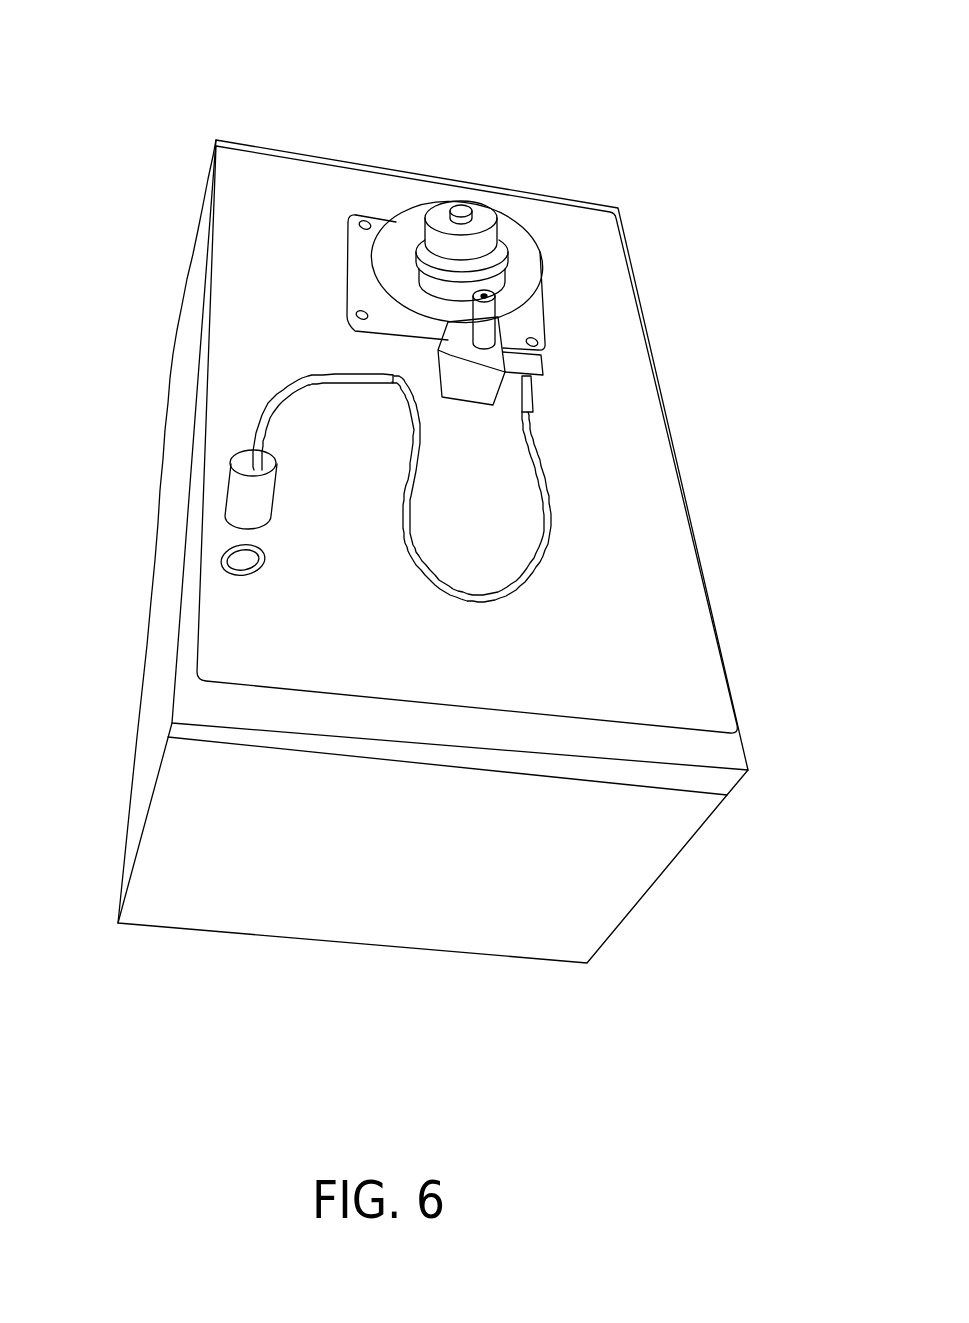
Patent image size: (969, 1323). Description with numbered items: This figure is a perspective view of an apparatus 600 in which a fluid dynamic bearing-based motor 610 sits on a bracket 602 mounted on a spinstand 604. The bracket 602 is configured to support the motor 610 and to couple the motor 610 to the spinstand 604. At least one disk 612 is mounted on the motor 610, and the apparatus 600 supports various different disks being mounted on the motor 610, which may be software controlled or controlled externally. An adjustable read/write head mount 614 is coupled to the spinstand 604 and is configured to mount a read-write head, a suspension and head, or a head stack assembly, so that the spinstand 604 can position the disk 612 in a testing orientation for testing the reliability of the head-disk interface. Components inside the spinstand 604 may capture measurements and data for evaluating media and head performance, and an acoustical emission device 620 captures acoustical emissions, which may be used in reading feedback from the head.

The apparatus 600 is at (72, 36).
The bracket 602 is at (363, 290).
The spinstand 604 is at (617, 655).
The motor 610 is at (409, 204).
The disk 612 is at (520, 250).
The read/write head mount 614 is at (487, 291).
The acoustical emission device 620 is at (533, 378).